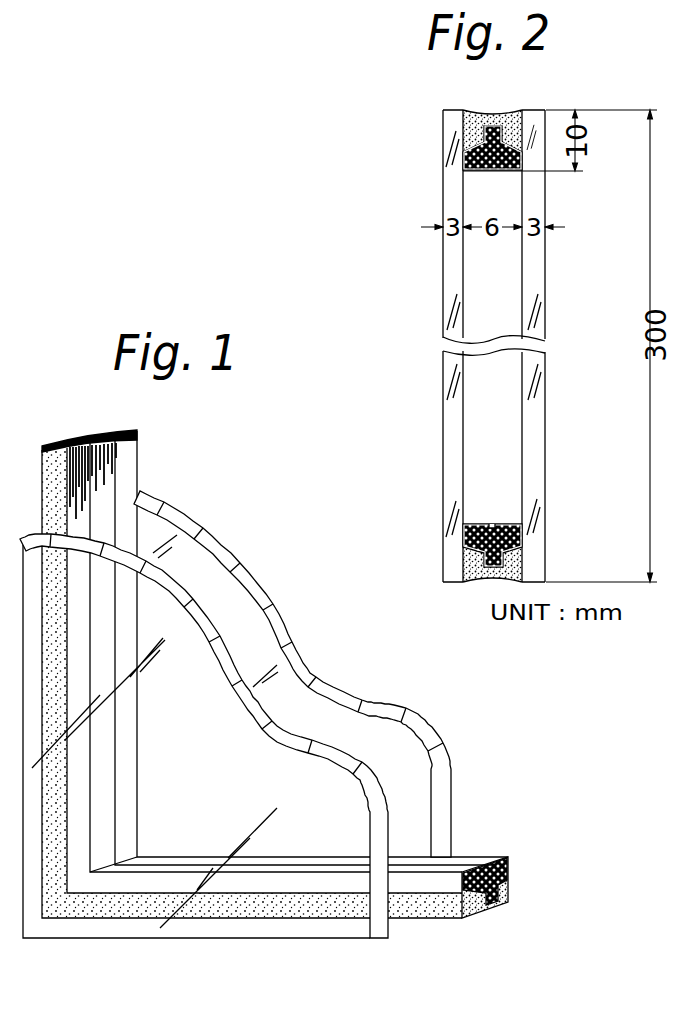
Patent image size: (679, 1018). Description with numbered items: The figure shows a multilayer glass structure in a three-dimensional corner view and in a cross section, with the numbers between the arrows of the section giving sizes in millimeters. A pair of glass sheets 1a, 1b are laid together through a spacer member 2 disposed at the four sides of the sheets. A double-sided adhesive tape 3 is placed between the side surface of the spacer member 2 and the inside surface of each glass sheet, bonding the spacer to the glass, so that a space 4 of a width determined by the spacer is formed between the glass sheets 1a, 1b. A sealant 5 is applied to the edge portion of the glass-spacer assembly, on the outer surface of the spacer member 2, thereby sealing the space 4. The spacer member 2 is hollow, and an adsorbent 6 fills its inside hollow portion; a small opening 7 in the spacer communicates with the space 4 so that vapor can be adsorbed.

In FIG. 1, the glass sheet 1a is at (377, 907).
In FIG. 2, the glass sheet 1a is at (448, 278).
In FIG. 1, the glass sheet 1b is at (400, 713).
In FIG. 2, the glass sheet 1b is at (535, 277).
In FIG. 1, the spacer member 2 is at (493, 907).
In FIG. 2, the spacer member 2 is at (520, 513).
In FIG. 1, the double-sided adhesive tape 3 is at (434, 880).
In FIG. 2, the double-sided adhesive tape 3 is at (520, 538).
In FIG. 1, the space 4 is at (417, 797).
In FIG. 2, the space 4 is at (508, 422).
In FIG. 1, the sealant 5 is at (508, 895).
In FIG. 2, the sealant 5 is at (463, 567).
In FIG. 1, the adsorbent 6 is at (508, 867).
In FIG. 2, the adsorbent 6 is at (463, 537).
In FIG. 1, the small opening 7 is at (487, 857).
In FIG. 2, the small opening 7 is at (493, 526).